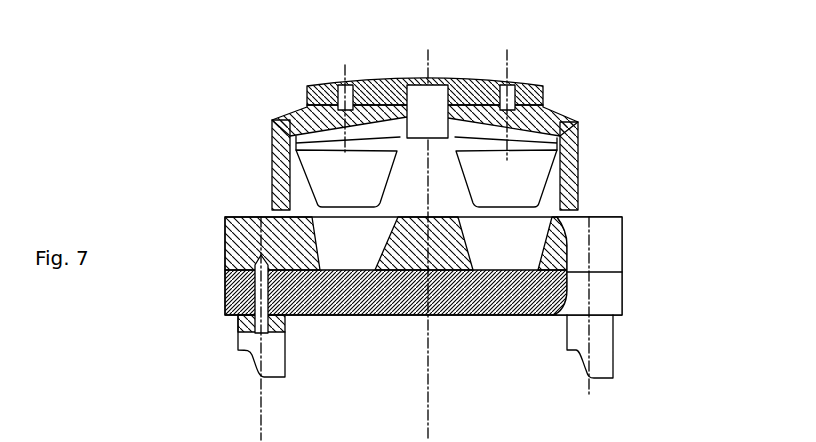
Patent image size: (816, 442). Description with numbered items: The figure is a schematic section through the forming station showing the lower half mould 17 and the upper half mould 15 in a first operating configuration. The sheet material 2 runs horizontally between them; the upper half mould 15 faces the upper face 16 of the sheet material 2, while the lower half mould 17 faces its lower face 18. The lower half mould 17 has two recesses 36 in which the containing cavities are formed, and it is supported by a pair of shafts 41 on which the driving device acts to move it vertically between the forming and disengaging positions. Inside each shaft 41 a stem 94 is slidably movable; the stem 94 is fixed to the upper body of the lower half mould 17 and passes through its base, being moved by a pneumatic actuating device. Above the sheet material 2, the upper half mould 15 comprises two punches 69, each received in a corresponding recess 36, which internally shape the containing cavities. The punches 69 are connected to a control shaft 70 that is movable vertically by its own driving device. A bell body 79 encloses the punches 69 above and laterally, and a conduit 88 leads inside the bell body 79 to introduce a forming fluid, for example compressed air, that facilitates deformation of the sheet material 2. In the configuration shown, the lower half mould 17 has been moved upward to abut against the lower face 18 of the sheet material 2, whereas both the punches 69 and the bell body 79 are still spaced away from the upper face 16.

The upper half mould 15 is at (567, 108).
The upper face 16 is at (362, 210).
The punch 69 is at (323, 172).
The control shaft 70 is at (435, 105).
The conduit 88 is at (345, 90).
The bell body 79 is at (270, 183).
The sheet material 2 is at (515, 182).
The lower face 18 is at (303, 230).
The recess 36 is at (622, 233).
The lower half mould 17 is at (602, 253).
The stem 94 is at (258, 300).
The shaft 41 is at (246, 340).